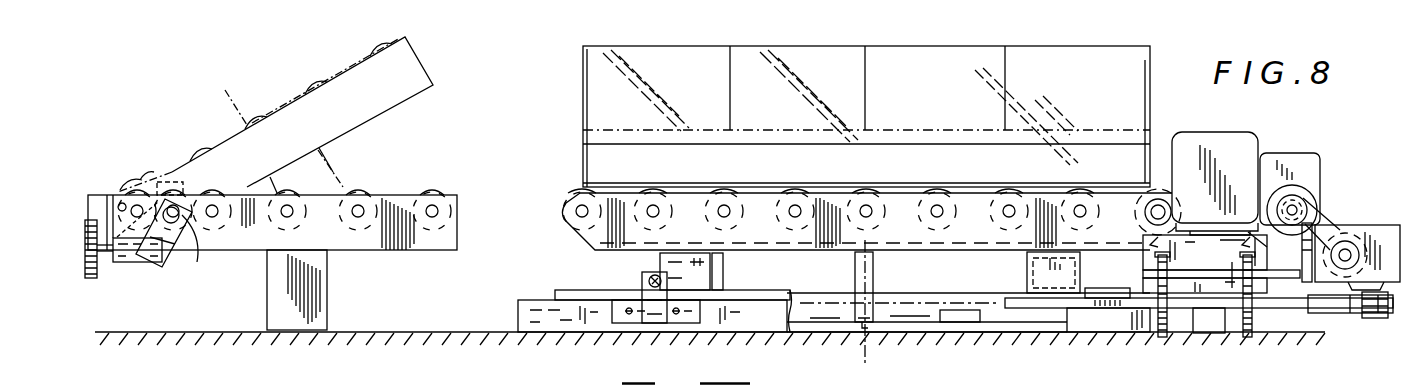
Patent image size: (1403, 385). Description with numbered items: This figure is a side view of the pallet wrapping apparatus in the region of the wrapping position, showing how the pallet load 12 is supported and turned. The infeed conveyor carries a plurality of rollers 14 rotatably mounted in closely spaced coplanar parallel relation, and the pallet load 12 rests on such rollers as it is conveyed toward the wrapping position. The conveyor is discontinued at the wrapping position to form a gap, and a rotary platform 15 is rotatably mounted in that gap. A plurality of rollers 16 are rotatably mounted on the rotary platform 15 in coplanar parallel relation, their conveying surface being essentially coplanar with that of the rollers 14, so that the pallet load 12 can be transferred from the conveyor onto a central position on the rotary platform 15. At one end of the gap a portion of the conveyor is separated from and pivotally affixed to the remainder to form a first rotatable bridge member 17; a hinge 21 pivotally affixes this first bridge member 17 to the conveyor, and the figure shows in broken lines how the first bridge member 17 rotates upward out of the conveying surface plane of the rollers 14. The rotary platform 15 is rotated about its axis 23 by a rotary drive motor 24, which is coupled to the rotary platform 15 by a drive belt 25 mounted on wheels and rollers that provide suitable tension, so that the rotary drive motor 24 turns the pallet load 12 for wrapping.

The pallet load 12 is at (590, 98).
The rollers 14 is at (431, 195).
The rotary platform 15 is at (925, 283).
The rollers 16 is at (790, 258).
The first rotatable bridge member 17 is at (372, 243).
The hinge 21 is at (177, 241).
The axis 23 is at (868, 355).
The rotary drive motor 24 is at (1240, 132).
The drive belt 25 is at (1228, 308).